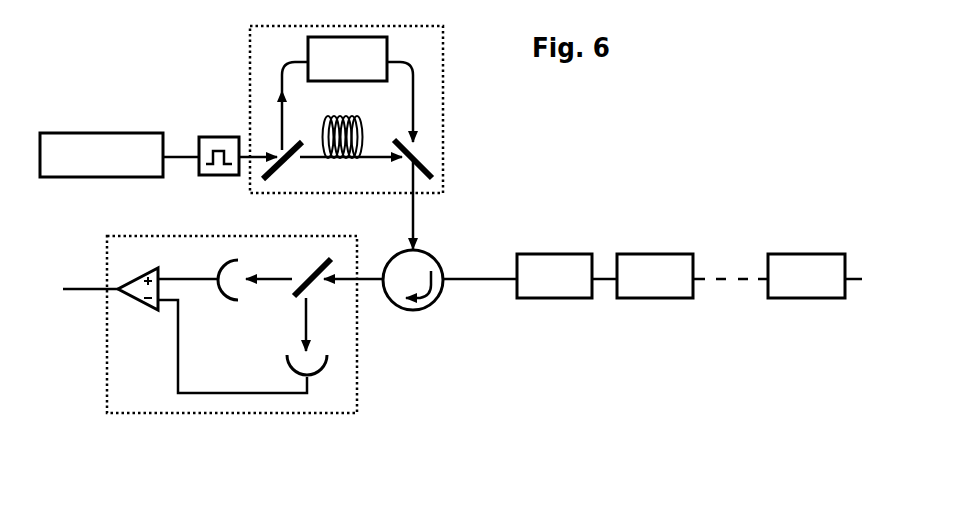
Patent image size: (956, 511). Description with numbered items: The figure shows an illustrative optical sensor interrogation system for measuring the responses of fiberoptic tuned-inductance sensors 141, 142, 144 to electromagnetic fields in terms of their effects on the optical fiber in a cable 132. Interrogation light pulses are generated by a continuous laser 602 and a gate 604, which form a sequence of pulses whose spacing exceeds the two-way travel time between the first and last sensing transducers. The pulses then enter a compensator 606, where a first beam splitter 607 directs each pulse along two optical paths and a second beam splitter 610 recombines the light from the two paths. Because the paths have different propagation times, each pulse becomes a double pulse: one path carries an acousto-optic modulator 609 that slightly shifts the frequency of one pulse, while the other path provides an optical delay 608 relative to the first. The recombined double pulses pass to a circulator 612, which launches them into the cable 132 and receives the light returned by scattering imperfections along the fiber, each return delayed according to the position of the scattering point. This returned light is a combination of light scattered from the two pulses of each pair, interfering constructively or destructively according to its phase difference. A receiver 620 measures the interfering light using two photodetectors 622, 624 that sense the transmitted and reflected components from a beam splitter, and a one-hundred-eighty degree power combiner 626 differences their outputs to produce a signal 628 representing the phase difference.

The continuous laser 602 is at (83, 178).
The gate 604 is at (233, 177).
The compensator 606 is at (287, 195).
The first beam splitter 607 is at (284, 166).
The optical delay 608 is at (345, 165).
The acousto-optic modulator 609 is at (344, 82).
The second beam splitter 610 is at (402, 143).
The circulator 612 is at (437, 262).
The cable 132 is at (492, 280).
The fiberoptic tuned-inductance sensor 141 is at (560, 299).
The fiberoptic tuned-inductance sensor 142 is at (662, 299).
The fiberoptic tuned-inductance sensor 144 is at (812, 299).
The receiver 620 is at (142, 415).
The photodetector 622 is at (219, 264).
The photodetector 624 is at (287, 357).
The 180° power combiner 626 is at (148, 271).
The signal 628 is at (90, 289).